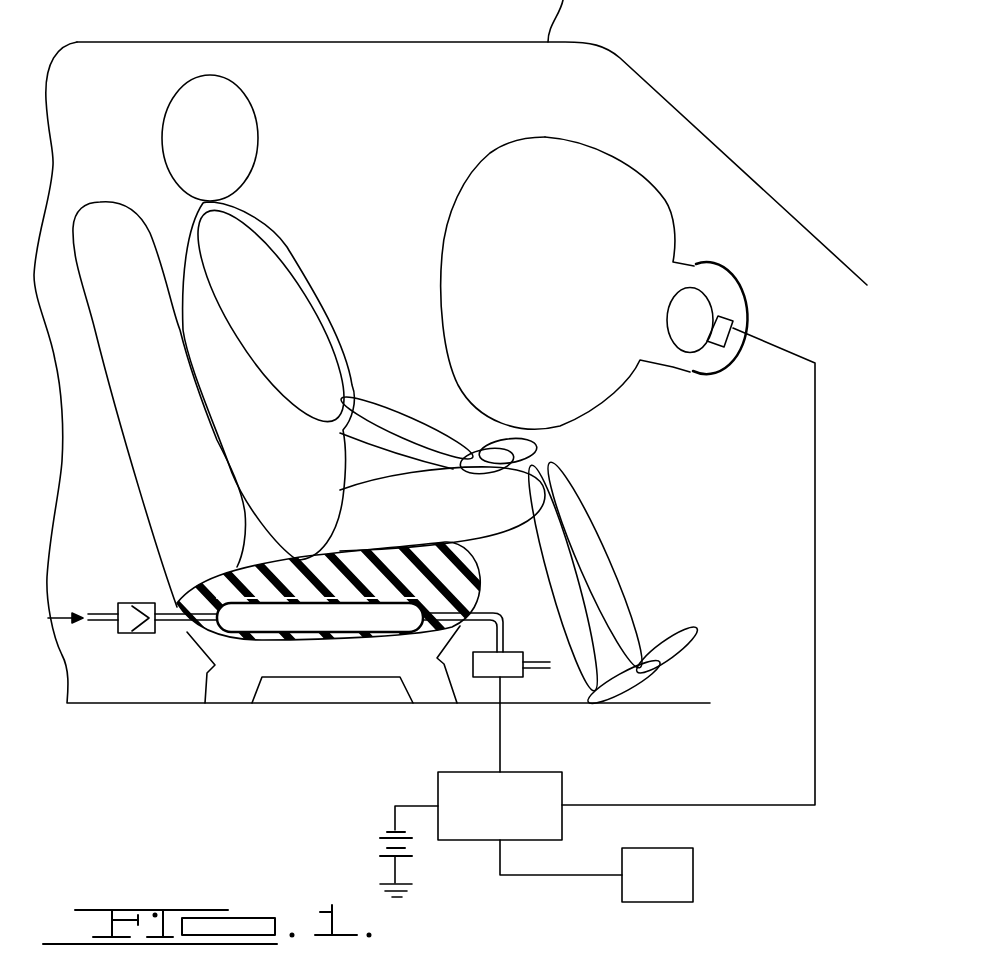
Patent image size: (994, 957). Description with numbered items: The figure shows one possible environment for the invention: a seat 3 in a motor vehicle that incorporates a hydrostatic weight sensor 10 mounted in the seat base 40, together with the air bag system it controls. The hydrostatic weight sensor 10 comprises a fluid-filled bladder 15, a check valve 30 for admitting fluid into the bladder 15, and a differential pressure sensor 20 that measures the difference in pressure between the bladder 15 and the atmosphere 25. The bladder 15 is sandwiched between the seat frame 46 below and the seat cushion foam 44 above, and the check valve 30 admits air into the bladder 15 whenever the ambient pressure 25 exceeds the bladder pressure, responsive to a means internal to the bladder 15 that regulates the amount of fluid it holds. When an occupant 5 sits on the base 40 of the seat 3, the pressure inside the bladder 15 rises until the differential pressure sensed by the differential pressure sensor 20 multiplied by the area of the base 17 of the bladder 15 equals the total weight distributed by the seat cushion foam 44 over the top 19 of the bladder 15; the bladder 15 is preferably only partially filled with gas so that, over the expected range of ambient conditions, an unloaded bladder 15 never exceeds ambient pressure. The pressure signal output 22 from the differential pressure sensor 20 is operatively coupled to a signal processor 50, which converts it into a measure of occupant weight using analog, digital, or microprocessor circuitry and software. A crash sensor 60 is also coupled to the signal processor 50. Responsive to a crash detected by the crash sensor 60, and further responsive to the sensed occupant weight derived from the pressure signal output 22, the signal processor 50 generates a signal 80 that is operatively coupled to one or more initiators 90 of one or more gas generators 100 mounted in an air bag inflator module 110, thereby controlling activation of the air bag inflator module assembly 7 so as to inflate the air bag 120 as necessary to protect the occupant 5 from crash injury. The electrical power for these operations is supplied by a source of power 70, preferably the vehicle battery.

The seat 3 is at (128, 465).
The occupant 5 is at (432, 392).
The air bag inflator module assembly 7 is at (626, 253).
The hydrostatic weight sensor 10 is at (330, 578).
The fluid-filled bladder 15 is at (251, 621).
The base of the bladder 17 is at (293, 621).
The top of the bladder 19 is at (324, 593).
The differential pressure sensor 20 is at (487, 678).
The pressure signal output 22 is at (498, 740).
The atmosphere 25 is at (557, 661).
The check valve 30 is at (126, 633).
The seat base 40 is at (510, 568).
The seat cushion foam 44 is at (221, 583).
The seat frame 46 is at (381, 672).
The signal processor 50 is at (562, 790).
The crash sensor 60 is at (693, 878).
The source of power 70 is at (373, 848).
The signal 80 is at (817, 460).
The initiator 90 is at (728, 320).
The gas generator 100 is at (699, 288).
The air bag inflator module 110 is at (677, 373).
The air bag 120 is at (583, 142).